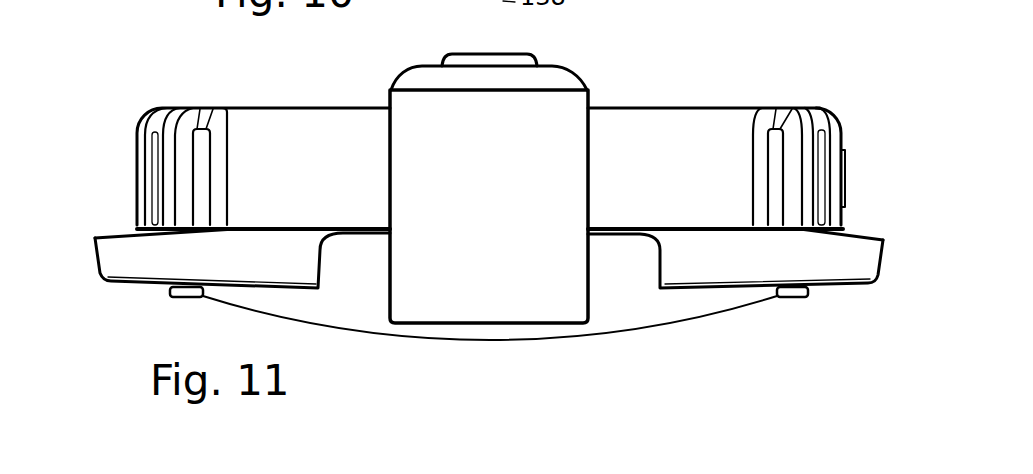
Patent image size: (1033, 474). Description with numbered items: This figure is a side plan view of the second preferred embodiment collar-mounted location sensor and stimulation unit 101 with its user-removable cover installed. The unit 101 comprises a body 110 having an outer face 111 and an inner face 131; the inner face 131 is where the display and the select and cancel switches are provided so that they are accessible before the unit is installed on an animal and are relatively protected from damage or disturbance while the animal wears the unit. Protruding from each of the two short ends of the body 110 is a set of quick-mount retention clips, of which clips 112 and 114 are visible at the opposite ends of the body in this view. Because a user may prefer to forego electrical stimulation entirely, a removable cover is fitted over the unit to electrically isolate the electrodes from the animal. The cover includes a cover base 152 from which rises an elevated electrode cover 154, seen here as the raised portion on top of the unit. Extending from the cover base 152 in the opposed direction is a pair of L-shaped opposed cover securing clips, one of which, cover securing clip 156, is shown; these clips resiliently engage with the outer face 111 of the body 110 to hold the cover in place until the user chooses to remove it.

The collar-mounted location sensor and stimulation unit 101 is at (122, 96).
The body 110 is at (807, 104).
The outer face 111 is at (703, 322).
The quick-mount retention clip 112 is at (880, 264).
The quick-mount retention clip 114 is at (96, 266).
The inner face 131 is at (650, 106).
The cover base 152 is at (410, 90).
The elevated electrode cover 154 is at (473, 56).
The cover securing clip 156 is at (512, 194).